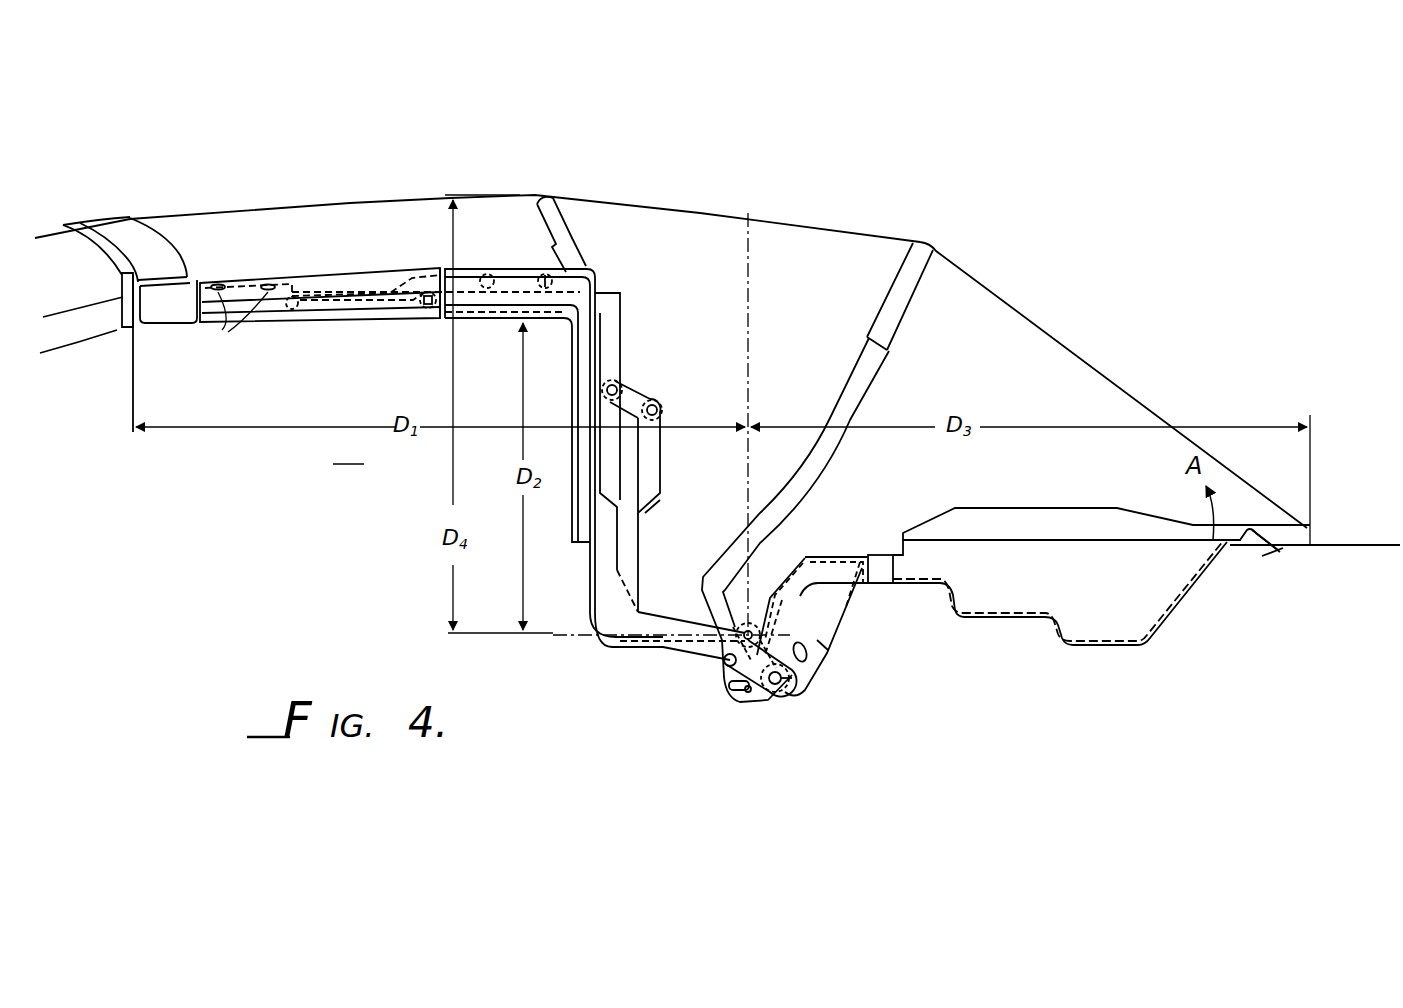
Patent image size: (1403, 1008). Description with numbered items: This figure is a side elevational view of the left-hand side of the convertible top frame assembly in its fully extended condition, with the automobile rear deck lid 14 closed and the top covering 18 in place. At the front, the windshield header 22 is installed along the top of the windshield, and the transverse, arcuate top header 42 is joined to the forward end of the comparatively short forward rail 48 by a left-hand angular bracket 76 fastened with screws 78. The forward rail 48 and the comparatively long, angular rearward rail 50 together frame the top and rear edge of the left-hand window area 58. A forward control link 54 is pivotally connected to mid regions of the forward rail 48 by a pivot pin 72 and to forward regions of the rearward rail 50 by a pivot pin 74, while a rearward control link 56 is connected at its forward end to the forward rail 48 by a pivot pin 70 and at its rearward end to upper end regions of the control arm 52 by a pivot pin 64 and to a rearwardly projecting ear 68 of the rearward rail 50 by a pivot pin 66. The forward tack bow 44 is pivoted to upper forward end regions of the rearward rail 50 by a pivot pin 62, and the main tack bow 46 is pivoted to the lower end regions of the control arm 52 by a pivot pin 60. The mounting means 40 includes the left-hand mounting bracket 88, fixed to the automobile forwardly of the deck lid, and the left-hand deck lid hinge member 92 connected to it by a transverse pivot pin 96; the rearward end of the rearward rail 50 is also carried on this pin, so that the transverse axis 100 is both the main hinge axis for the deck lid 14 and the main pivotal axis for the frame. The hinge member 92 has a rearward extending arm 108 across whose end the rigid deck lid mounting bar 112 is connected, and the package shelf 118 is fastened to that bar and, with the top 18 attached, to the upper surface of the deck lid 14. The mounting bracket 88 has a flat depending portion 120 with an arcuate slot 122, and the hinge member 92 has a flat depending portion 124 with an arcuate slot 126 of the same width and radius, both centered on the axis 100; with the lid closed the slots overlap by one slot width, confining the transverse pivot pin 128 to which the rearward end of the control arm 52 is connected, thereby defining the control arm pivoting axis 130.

The rear deck lid 14 is at (1340, 545).
The top covering 18 is at (742, 212).
The windshield header 22 is at (127, 323).
The mounting means 40 is at (771, 713).
The top header 42 is at (113, 225).
The forward tack bow 44 is at (558, 221).
The main tack bow 46 is at (845, 385).
The forward rail 48 is at (277, 279).
The rearward rail 50 is at (481, 317).
The control arm 52 is at (640, 530).
The forward control link 54 is at (352, 290).
The rearward control link 56 is at (623, 322).
The left-hand window area 58 is at (349, 451).
The pivot pin 60 is at (724, 661).
The pivot pin 62 is at (544, 274).
The pivot pin 64 is at (662, 410).
The pivot pin 66 is at (620, 390).
The ear 68 is at (613, 386).
The pivot pin 70 is at (422, 308).
The pivot pin 72 is at (292, 310).
The pivot pin 74 is at (490, 275).
The angular bracket 76 is at (205, 281).
The screws 78 is at (230, 322).
The left-hand mounting bracket 88 is at (842, 615).
The left-hand deck lid hinge member 92 is at (718, 691).
The left-hand transverse pivot pin 96 is at (752, 620).
The transverse axis 100 is at (745, 633).
The rearward extending arm 108 is at (860, 556).
The deck lid mounting bar 112 is at (895, 570).
The package shelf 118 is at (1115, 650).
The flat depending portion 120 is at (820, 645).
The arcuate slot 122 is at (806, 655).
The flat depending portion 124 is at (736, 690).
The arcuate slot 126 is at (747, 692).
The transverse pivot pin 128 is at (790, 680).
The control arm pivoting axis 130 is at (780, 684).